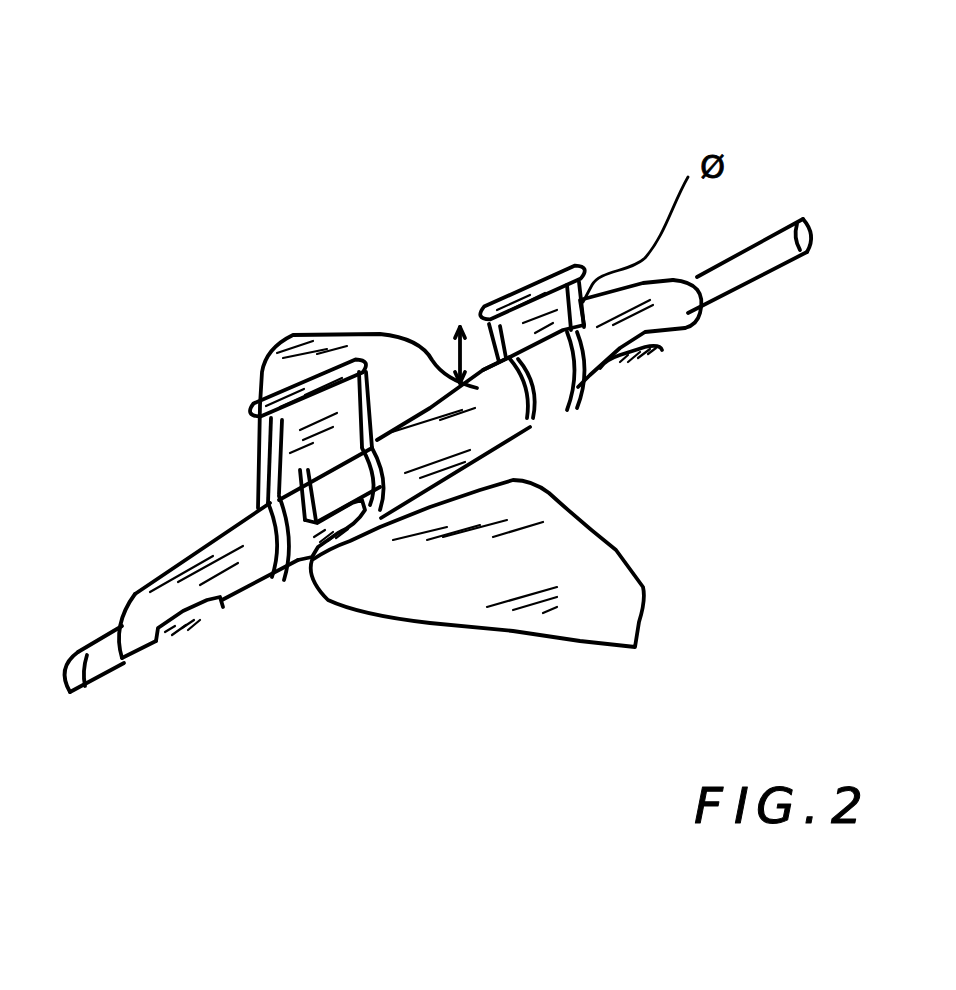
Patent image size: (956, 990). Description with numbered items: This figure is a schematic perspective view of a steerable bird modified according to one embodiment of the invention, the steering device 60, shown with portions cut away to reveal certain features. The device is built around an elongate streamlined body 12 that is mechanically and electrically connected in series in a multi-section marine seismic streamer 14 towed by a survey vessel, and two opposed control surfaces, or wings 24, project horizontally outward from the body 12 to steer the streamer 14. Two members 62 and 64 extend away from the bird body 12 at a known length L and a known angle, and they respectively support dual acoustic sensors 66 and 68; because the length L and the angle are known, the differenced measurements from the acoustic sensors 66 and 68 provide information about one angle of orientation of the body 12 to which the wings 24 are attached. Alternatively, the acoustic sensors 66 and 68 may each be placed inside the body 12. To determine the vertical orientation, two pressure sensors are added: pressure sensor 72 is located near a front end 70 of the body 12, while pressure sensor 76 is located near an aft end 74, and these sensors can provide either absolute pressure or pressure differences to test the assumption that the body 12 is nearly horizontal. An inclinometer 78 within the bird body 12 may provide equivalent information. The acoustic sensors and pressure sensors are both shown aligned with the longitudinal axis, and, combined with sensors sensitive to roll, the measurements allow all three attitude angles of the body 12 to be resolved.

The body 12 is at (593, 375).
The marine seismic streamer 14 is at (767, 277).
The wings 24 is at (418, 377).
The steering device 60 is at (586, 117).
The member 62 is at (268, 472).
The member 64 is at (580, 308).
The acoustic sensor 66 is at (250, 414).
The acoustic sensor 68 is at (523, 287).
The front end 70 is at (134, 597).
The pressure sensor 72 is at (187, 634).
The aft end 74 is at (672, 283).
The pressure sensor 76 is at (662, 350).
The inclinometer 78 is at (296, 560).
The length L is at (457, 355).